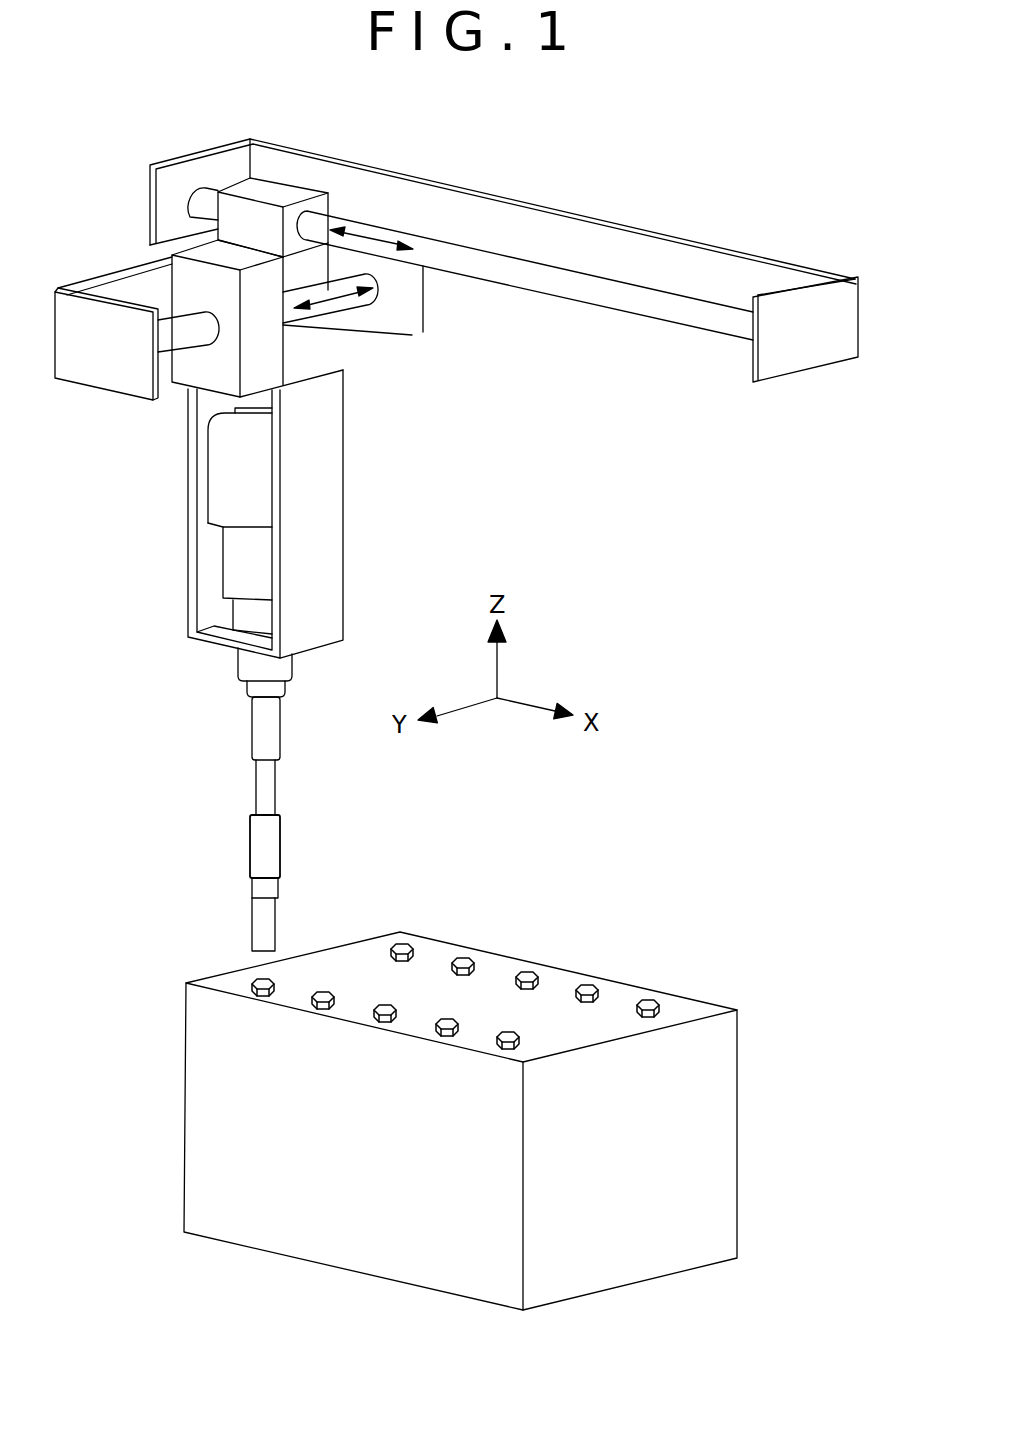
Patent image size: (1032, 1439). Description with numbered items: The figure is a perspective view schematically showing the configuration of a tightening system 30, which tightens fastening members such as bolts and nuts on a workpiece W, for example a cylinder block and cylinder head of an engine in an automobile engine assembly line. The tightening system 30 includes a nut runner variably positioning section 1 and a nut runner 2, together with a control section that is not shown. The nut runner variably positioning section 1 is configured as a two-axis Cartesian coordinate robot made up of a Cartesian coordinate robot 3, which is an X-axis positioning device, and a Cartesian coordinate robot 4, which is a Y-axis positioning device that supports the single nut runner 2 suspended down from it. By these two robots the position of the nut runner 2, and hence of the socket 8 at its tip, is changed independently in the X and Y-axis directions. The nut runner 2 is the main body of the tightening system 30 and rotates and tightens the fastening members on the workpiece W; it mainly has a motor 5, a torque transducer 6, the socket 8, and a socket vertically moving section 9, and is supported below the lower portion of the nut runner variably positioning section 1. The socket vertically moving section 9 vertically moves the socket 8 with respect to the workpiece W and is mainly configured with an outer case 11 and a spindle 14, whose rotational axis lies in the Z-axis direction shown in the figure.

The nut runner variably positioning section 1 is at (112, 212).
The nut runner 2 is at (383, 520).
The Cartesian coordinate robot 3 is at (283, 177).
The Cartesian coordinate robot 4 is at (296, 338).
The motor 5 is at (215, 485).
The torque transducer 6 is at (230, 565).
The socket 8 is at (268, 917).
The socket vertically moving section 9 is at (203, 679).
The outer case 11 is at (282, 722).
The spindle 14 is at (270, 795).
The tightening system 30 is at (504, 228).
The workpiece W is at (741, 1021).